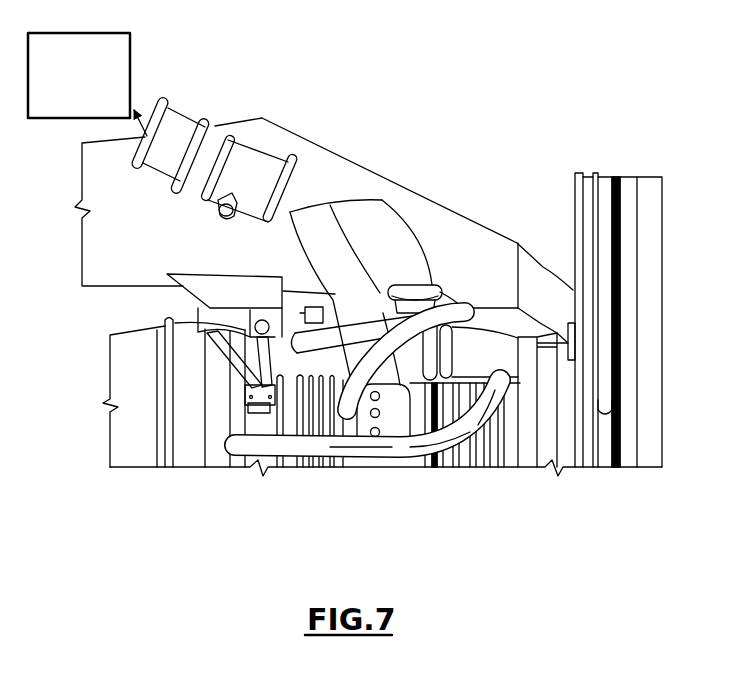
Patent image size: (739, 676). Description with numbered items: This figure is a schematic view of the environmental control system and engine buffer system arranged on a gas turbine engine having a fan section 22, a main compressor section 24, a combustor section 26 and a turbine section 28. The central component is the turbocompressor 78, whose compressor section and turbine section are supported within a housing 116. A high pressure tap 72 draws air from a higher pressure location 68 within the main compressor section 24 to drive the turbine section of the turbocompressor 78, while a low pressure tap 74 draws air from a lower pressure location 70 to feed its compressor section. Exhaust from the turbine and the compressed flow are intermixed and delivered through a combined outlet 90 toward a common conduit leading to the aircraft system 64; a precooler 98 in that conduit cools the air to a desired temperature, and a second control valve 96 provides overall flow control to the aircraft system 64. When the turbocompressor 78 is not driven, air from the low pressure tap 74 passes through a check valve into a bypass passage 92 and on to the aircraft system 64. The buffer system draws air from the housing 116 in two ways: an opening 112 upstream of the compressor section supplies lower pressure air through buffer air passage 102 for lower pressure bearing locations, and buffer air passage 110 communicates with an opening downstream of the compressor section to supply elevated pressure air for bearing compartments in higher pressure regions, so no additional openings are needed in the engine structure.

The fan section 22 is at (662, 503).
The main compressor section 24 is at (517, 503).
The combustor section 26 is at (337, 503).
The turbine section 28 is at (272, 503).
The aircraft system 64 is at (131, 60).
The higher pressure location 68 is at (403, 403).
The lower pressure location 70 is at (532, 331).
The high pressure tap 72 is at (368, 397).
The low pressure tap 74 is at (490, 360).
The turbocompressor 78 is at (447, 254).
The combined outlet 90 is at (393, 238).
The bypass passage 92 is at (357, 283).
The second control valve 96 is at (262, 155).
The precooler 98 is at (176, 110).
The buffer air passage 102 is at (348, 443).
The buffer air passage 110 is at (343, 387).
The opening 112 is at (500, 404).
The housing 116 is at (471, 318).